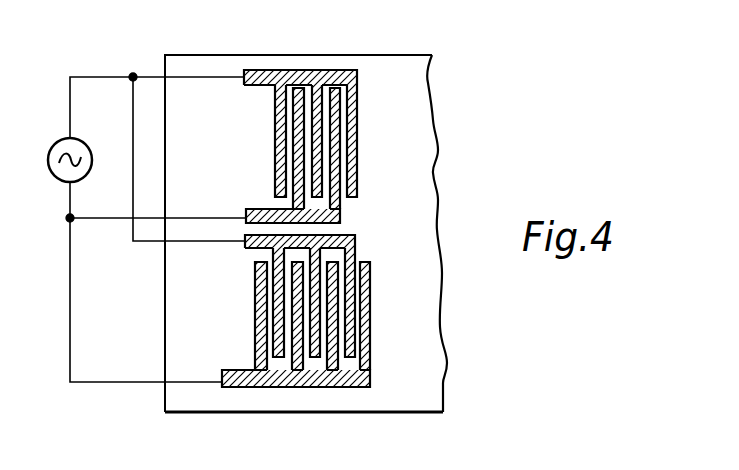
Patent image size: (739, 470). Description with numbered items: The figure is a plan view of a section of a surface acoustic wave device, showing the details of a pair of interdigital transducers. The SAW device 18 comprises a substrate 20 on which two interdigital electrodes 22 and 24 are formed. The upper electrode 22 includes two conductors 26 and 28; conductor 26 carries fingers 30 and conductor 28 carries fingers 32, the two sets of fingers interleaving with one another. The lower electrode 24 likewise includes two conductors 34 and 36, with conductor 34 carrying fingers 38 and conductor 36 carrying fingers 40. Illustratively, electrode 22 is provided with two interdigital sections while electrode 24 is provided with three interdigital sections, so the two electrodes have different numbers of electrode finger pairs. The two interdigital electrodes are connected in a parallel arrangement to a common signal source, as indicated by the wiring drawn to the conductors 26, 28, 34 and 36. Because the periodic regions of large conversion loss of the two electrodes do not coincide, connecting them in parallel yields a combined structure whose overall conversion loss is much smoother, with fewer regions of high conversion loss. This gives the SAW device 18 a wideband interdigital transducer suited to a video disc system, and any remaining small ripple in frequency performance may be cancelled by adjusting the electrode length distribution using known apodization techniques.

The SAW device 18 is at (148, 330).
The substrate 20 is at (440, 327).
The interdigital electrode 22 is at (253, 157).
The interdigital electrode 24 is at (240, 330).
The conductor 26 is at (263, 77).
The conductor 28 is at (342, 212).
The fingers 30 is at (353, 88).
The fingers 32 is at (334, 188).
The conductor 34 is at (371, 378).
The conductor 36 is at (355, 241).
The fingers 38 is at (333, 365).
The fingers 40 is at (259, 278).